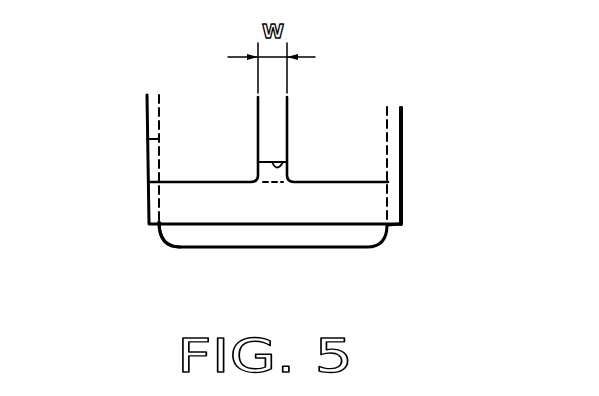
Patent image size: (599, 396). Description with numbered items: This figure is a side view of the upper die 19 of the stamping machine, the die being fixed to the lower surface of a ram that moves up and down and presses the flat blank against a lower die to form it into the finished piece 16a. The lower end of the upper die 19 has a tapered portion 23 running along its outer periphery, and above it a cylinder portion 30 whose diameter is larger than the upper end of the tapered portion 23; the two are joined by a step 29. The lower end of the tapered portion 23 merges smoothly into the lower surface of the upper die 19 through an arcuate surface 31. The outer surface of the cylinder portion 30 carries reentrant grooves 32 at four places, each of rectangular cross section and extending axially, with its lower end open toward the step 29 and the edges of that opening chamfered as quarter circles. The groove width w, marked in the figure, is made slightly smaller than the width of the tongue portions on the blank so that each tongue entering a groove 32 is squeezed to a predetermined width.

The piece 16a is at (320, 210).
The upper die 19 is at (402, 117).
The tapered portion 23 is at (407, 217).
The step 29 is at (288, 168).
The cylinder portion 30 is at (403, 133).
The arcuate surface 31 is at (172, 238).
The reentrant groove 32 is at (147, 139).